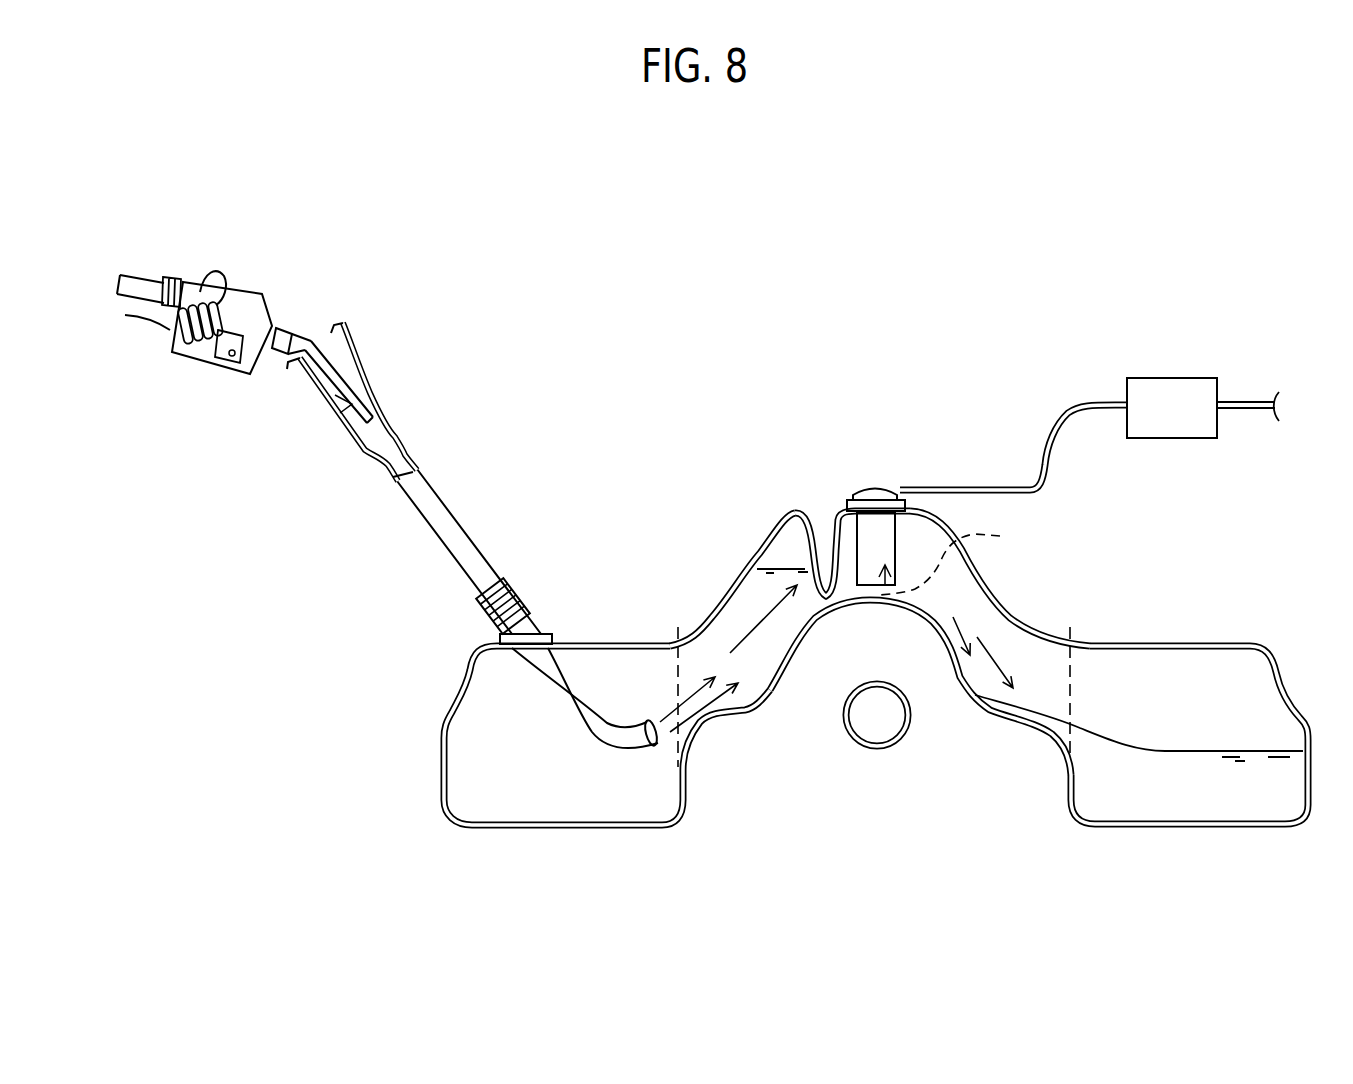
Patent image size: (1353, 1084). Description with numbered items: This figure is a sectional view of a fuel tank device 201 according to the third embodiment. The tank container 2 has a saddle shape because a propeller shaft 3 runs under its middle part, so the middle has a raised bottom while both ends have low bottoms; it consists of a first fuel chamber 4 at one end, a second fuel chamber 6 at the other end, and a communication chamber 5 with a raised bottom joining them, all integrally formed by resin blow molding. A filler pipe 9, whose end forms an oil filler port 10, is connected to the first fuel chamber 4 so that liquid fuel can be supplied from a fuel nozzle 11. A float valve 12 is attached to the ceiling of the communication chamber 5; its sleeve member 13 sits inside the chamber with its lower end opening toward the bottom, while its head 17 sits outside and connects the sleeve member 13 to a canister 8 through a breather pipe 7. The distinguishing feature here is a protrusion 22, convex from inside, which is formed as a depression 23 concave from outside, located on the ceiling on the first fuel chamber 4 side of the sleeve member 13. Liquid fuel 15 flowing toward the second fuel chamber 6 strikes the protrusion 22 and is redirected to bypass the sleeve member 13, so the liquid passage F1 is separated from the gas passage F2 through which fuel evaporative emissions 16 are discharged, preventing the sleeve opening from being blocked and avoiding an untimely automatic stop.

The fuel tank device 201 is at (606, 384).
The tank container 2 is at (630, 645).
The propeller shaft 3 is at (848, 730).
The first fuel chamber 4 is at (557, 826).
The communication chamber 5 is at (980, 700).
The second fuel chamber 6 is at (1250, 828).
The breather pipe 7 is at (967, 488).
The canister 8 is at (1178, 390).
The filler pipe 9 is at (437, 525).
The oil filler port 10 is at (350, 417).
The fuel nozzle 11 is at (245, 300).
The float valve 12 is at (862, 466).
The sleeve member 13 is at (867, 541).
The liquid fuel 15 is at (608, 792).
The fuel evaporative emissions 16 is at (1187, 713).
The head 17 is at (870, 488).
The protrusion 22 is at (827, 597).
The depression 23 is at (806, 511).
The liquid passage F1 is at (694, 700).
The gas passage F2 is at (958, 604).